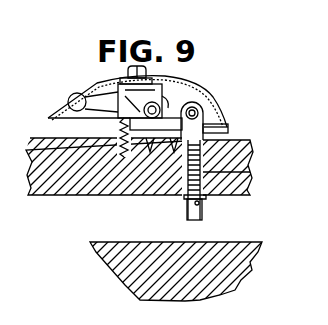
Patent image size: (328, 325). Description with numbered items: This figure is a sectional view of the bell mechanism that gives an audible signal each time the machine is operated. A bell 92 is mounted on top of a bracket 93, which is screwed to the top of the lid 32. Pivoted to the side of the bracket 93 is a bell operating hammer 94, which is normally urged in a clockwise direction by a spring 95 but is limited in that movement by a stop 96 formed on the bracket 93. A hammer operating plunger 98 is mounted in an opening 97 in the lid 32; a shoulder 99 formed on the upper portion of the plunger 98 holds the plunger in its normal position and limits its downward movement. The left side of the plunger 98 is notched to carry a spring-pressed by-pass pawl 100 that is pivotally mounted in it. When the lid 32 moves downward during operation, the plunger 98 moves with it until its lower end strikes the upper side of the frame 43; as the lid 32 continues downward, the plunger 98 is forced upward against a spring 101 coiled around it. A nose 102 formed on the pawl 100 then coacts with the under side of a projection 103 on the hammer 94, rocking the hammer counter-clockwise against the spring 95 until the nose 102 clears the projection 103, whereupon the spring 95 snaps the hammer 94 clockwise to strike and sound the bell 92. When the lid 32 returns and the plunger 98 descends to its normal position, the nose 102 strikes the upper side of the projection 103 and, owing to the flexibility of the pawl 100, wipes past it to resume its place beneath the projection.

The lid 32 is at (47, 140).
The frame 43 is at (233, 248).
The bell 92 is at (93, 86).
The bracket 93 is at (152, 84).
The bell operating hammer 94 is at (118, 80).
The spring 95 is at (124, 128).
The stop 96 is at (163, 102).
The opening 97 is at (251, 162).
The hammer operating plunger 98 is at (204, 207).
The shoulder 99 is at (212, 131).
The by-pass pawl 100 is at (206, 113).
The spring 101 is at (186, 198).
The nose 102 is at (216, 100).
The projection 103 is at (186, 85).